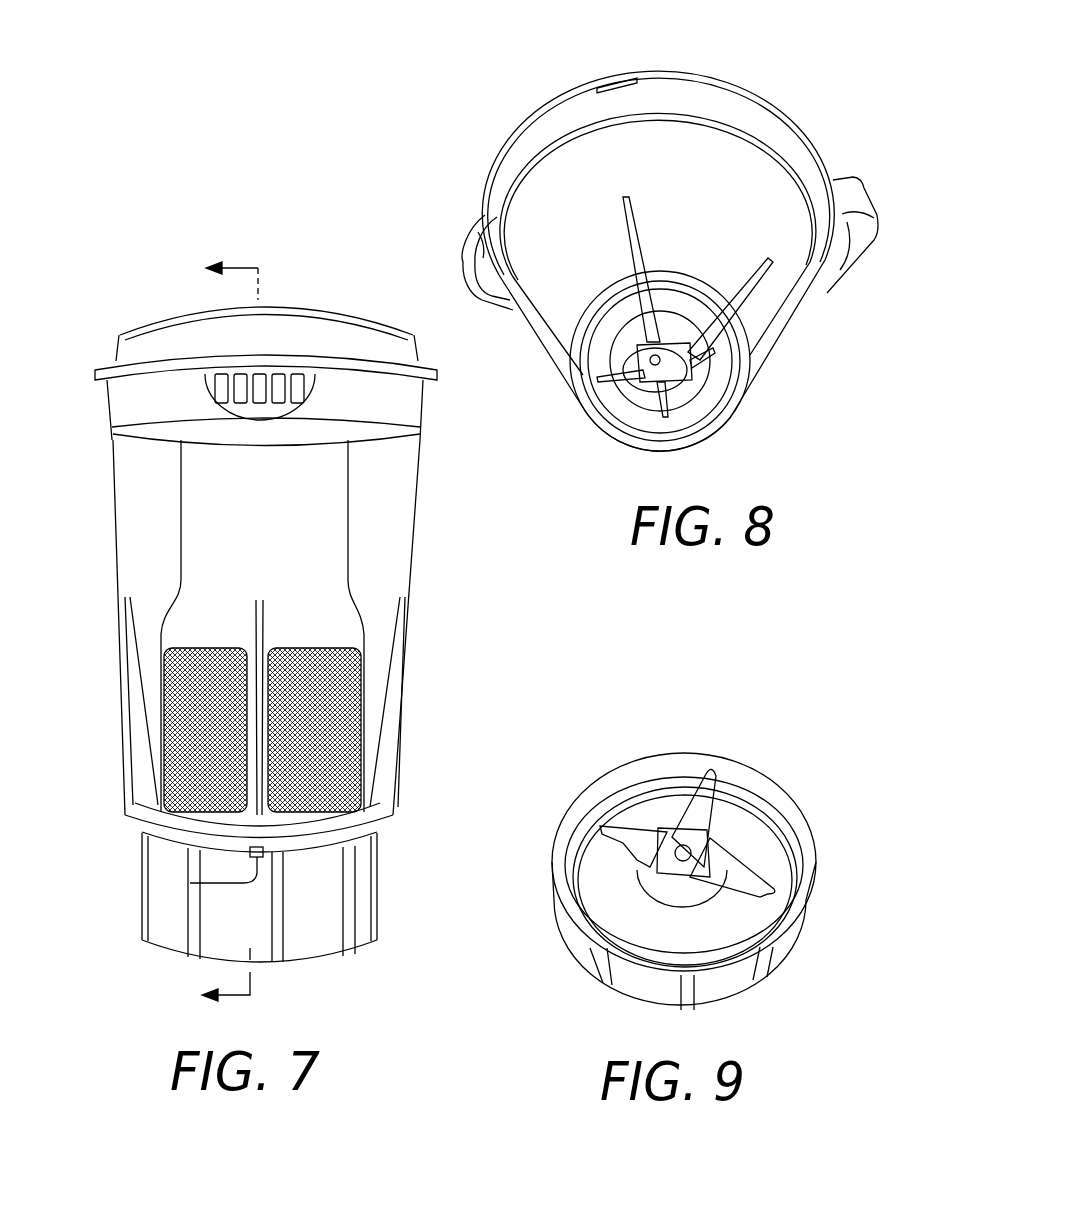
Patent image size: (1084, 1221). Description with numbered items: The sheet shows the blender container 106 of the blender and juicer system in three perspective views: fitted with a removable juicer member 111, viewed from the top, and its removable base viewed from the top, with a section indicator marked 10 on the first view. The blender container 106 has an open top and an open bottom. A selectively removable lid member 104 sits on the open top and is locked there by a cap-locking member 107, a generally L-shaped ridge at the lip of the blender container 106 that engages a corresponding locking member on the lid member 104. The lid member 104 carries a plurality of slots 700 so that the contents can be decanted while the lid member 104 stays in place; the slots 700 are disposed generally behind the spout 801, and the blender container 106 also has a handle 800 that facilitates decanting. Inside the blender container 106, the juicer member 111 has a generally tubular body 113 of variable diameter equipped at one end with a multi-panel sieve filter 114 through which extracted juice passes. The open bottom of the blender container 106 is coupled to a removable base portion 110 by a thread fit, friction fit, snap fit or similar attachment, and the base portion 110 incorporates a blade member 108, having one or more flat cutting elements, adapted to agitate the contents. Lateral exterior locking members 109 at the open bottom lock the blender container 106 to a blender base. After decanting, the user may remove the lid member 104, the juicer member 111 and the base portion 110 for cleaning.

In FIG. 7, the section line 10- 10 is at (204, 630).
In FIG. 7, the lid member 104 is at (388, 337).
In FIG. 7, the blender container 106 is at (140, 532).
In FIG. 8, the blender container 106 is at (743, 113).
In FIG. 8, the cap-locking member 107 is at (607, 87).
In FIG. 8, the blade member 108 is at (635, 325).
In FIG. 9, the blade member 108 is at (695, 820).
In FIG. 7, the locking members 109 is at (190, 883).
In FIG. 7, the removable base portion 110 is at (360, 900).
In FIG. 9, the removable base portion 110 is at (760, 793).
In FIG. 7, the juicer member 111 is at (354, 482).
In FIG. 7, the tubular body 113 is at (332, 552).
In FIG. 7, the multi-panel sieve filter 114 is at (320, 723).
In FIG. 7, the slots 700 is at (279, 385).
In FIG. 8, the handle 800 is at (845, 187).
In FIG. 7, the spout 801 is at (313, 380).
In FIG. 8, the spout 801 is at (482, 225).